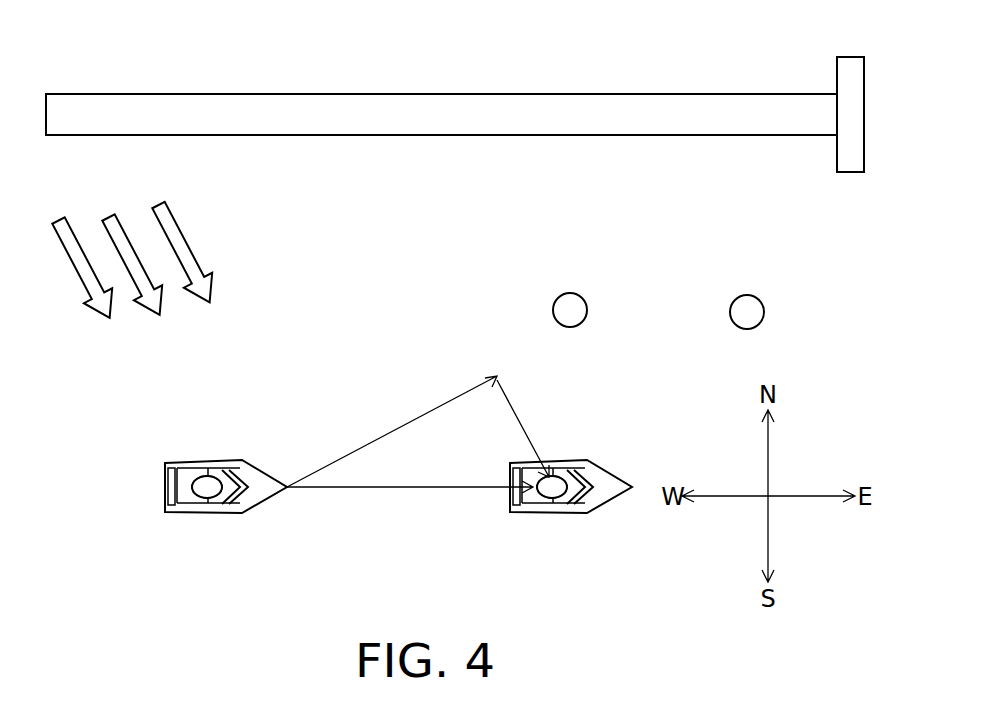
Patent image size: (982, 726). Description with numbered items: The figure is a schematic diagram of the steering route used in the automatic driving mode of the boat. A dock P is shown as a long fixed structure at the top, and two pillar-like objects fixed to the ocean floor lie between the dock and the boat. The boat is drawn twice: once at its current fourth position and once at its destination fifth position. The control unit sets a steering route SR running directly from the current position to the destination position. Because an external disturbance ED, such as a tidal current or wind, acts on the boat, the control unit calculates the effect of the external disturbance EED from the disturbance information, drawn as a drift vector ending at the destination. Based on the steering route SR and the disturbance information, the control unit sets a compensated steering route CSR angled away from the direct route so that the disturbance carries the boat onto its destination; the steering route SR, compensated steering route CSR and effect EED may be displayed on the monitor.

The pier P is at (711, 94).
The external disturbance ED is at (72, 230).
The steering route SR is at (410, 500).
The compensated steering route CSR is at (392, 431).
The effect of the external disturbance EED is at (528, 428).